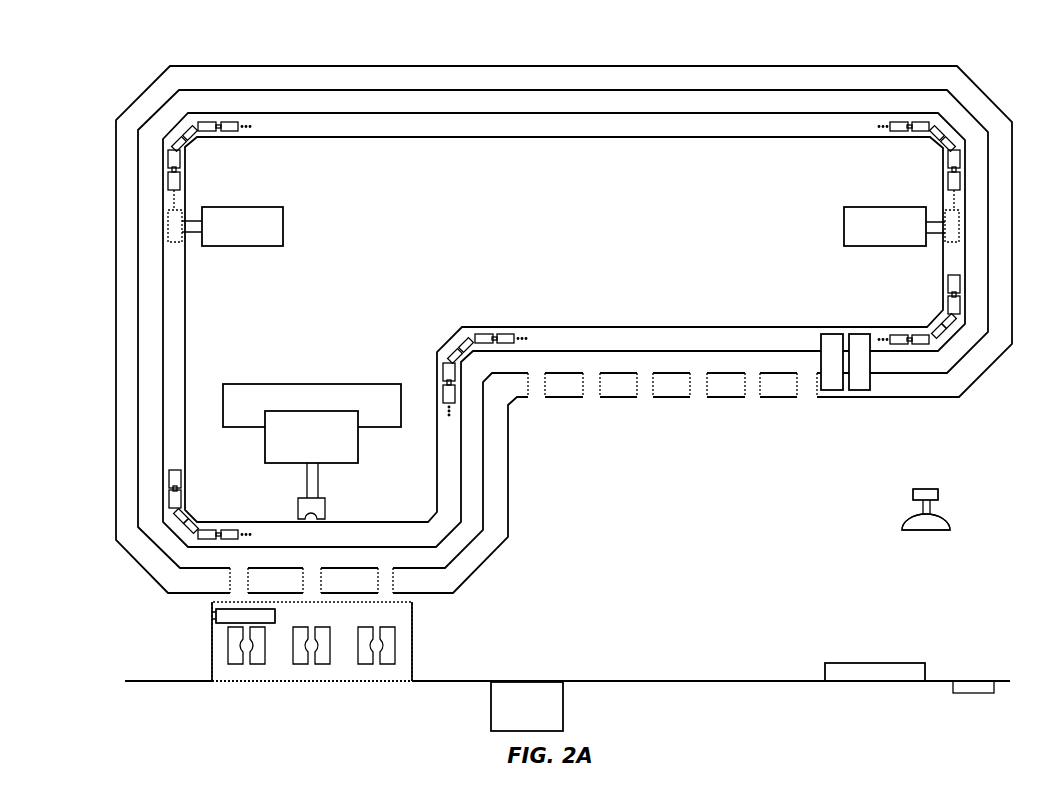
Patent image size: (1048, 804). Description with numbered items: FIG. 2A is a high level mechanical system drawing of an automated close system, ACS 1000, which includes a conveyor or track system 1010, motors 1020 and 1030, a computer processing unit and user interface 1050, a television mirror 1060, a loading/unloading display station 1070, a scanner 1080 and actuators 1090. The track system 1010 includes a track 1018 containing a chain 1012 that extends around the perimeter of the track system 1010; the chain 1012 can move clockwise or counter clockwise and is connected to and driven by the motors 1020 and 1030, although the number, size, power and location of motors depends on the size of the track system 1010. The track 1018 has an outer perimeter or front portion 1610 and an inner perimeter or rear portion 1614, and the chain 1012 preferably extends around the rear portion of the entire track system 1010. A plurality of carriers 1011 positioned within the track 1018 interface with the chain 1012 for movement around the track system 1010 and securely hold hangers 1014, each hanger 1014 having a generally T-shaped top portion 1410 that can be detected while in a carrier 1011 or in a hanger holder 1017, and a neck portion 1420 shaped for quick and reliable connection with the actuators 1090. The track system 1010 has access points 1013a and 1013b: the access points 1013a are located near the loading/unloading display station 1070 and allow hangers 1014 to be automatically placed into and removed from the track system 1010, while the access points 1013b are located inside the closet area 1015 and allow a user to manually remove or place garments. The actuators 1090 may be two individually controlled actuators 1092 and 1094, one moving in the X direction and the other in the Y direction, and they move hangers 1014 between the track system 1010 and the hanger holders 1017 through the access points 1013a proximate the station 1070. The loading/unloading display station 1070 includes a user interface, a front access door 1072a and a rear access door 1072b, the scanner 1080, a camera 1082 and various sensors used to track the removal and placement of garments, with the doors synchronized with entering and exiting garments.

The automated close system (ACS) 1000 is at (108, 56).
The track system 1010 is at (127, 108).
The track 1018 is at (490, 65).
The chain 1012 is at (186, 140).
The motor 1020 is at (267, 246).
The motor 1030 is at (853, 207).
The actuators 1090 is at (311, 410).
The actuator 1092 is at (255, 384).
The actuator 1094 is at (337, 465).
The rear portion 1614 is at (645, 327).
The carriers 1011 is at (860, 334).
The access points 1013b is at (645, 398).
The front portion 1610 is at (508, 515).
The access points 1013a is at (396, 580).
The closet area 1015 is at (747, 547).
The top portion 1410 is at (928, 488).
The neck portion 1420 is at (922, 512).
The hanger 1014 is at (932, 484).
The scanner 1080 is at (215, 618).
The camera 1082 is at (278, 617).
The rear access door 1072b is at (396, 605).
The loading/unloading display station 1070 is at (323, 661).
The front access door 1072a is at (247, 683).
The hanger holders 1017 is at (338, 660).
The television (TV) mirror 1060 is at (563, 700).
The computer processing unit and user interface 1050 is at (972, 693).